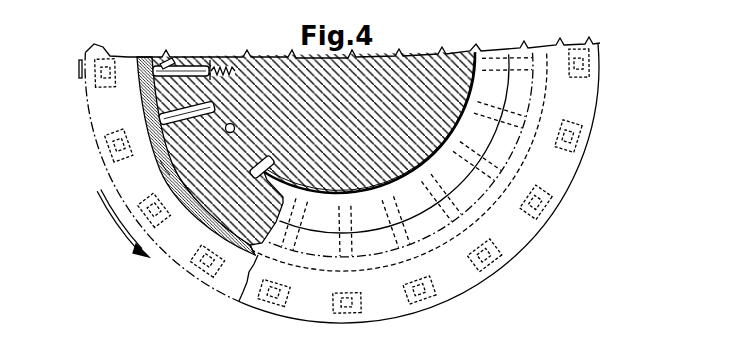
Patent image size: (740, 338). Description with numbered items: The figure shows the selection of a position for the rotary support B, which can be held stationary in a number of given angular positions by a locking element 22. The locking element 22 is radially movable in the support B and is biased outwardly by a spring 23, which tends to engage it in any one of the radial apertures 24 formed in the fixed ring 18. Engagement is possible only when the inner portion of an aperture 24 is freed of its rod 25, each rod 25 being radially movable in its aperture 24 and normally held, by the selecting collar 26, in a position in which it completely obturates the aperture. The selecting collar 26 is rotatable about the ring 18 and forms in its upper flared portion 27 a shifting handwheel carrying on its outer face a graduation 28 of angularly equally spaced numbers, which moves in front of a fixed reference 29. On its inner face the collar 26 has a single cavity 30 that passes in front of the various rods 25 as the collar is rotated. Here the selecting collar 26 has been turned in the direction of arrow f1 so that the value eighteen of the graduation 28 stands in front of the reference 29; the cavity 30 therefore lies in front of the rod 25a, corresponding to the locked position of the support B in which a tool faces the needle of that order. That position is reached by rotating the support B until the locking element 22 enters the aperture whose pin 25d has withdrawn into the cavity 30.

The fixed ring 18 is at (150, 98).
The locking element 22 is at (205, 62).
The spring 23 is at (229, 62).
The radial aperture 24 is at (184, 126).
The rod 25 is at (234, 126).
The rod 25a is at (168, 60).
The pin 25d is at (262, 166).
The selecting collar 26 is at (161, 160).
The upper flared portion 27 is at (342, 181).
The graduation 28 is at (195, 250).
The fixed reference 29 is at (78, 60).
The cavity 30 is at (227, 209).
The support B is at (313, 148).
The arrow f1 is at (123, 224).